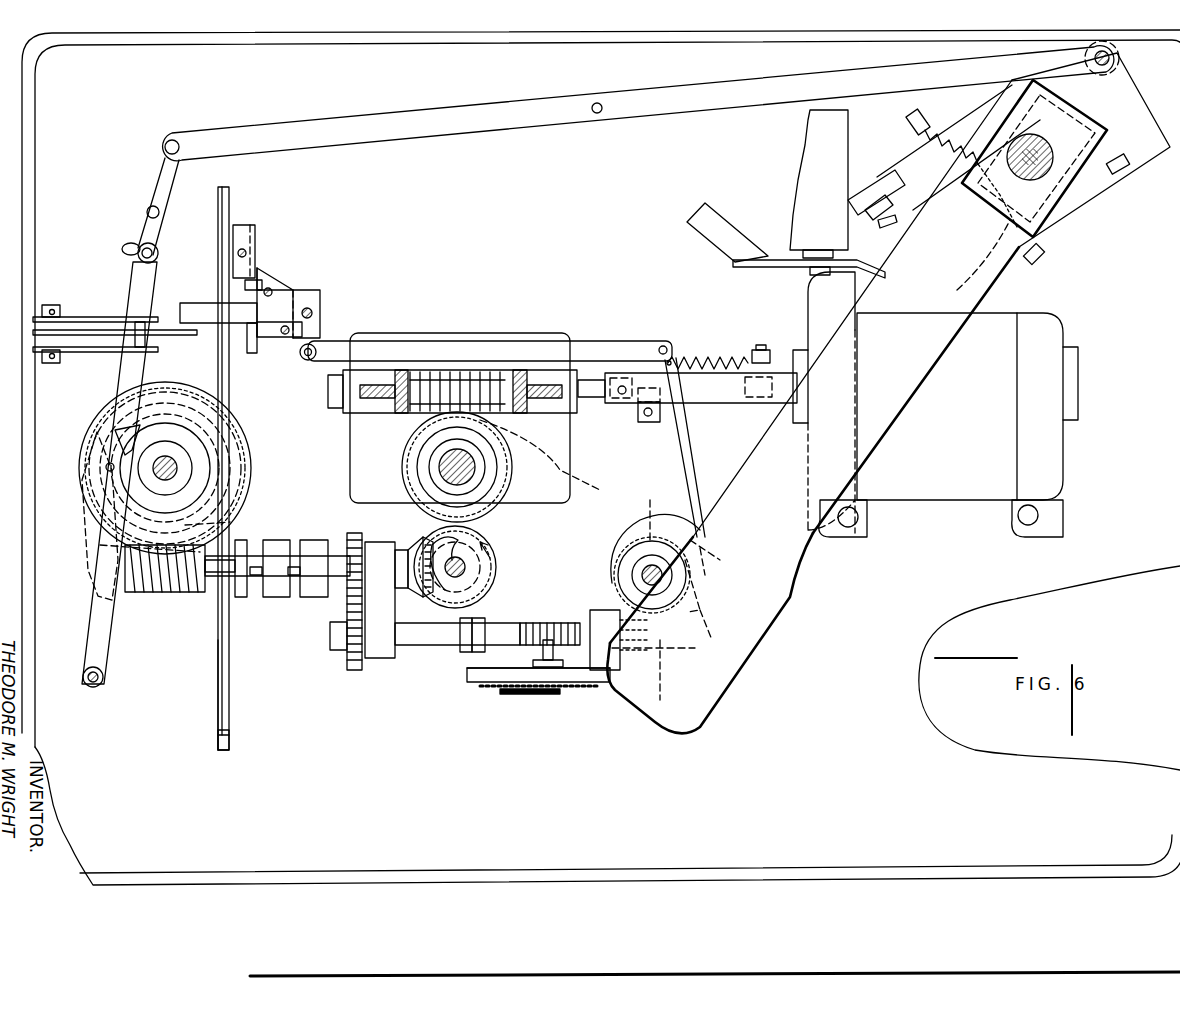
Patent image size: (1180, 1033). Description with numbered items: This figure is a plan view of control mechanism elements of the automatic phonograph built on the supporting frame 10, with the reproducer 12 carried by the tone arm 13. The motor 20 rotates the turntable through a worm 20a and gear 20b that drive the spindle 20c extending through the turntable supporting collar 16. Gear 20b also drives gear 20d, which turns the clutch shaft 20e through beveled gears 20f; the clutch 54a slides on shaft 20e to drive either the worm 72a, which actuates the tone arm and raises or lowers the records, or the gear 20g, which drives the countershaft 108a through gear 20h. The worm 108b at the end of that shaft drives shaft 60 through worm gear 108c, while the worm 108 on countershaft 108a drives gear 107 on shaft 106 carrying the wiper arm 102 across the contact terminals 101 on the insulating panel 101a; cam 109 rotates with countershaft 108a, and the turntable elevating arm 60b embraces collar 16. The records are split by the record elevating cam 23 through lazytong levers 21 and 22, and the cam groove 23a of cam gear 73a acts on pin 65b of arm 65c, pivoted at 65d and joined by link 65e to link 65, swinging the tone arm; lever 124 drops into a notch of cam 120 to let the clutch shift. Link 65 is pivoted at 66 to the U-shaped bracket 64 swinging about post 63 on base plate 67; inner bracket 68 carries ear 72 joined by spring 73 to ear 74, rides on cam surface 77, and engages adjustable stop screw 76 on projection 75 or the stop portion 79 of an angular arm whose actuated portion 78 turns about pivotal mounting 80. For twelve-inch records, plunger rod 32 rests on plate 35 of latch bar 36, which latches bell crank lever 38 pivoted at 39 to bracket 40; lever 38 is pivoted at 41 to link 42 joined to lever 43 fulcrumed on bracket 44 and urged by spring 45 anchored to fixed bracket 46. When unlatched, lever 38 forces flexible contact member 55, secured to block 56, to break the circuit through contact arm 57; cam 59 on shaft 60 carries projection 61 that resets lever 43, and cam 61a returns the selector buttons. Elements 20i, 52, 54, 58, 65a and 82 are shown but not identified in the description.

The supporting frame 10 is at (999, 679).
The reproducer 12 is at (732, 665).
The tone arm 13 is at (888, 405).
The turntable supporting collar 16 is at (425, 480).
The motor 20 is at (935, 500).
The worm 20a is at (475, 368).
The gear 20b is at (440, 467).
The spindle 20c is at (440, 460).
The gear 20d is at (497, 553).
The clutch shaft 20e is at (333, 556).
The beveled gears 20f is at (425, 594).
The gear 20g is at (357, 534).
The gear 20h is at (350, 660).
The pawl 20i is at (468, 570).
The lazytong lever 21 is at (230, 640).
The lazytong lever 22 is at (218, 633).
The record elevating cam 23 is at (238, 510).
The cam groove 23a is at (112, 437).
The plunger rod 32 is at (246, 253).
The plate 35 is at (245, 228).
The latch bar 36 is at (250, 335).
The bell crank lever 38 is at (190, 302).
The pivot 39 is at (312, 312).
The bracket 40 is at (278, 290).
The pivot 41 is at (304, 360).
The link 42 is at (445, 345).
The lever 43 is at (690, 463).
The bracket 44 is at (650, 424).
The spring 45 is at (683, 358).
The fixed bracket 46 is at (760, 347).
The rod end 52 is at (217, 688).
The gear 54 is at (245, 440).
The clutch 54a is at (277, 590).
The flexible electric contact member 55 is at (160, 335).
The block 56 is at (52, 302).
The contact arm 57 is at (92, 315).
The bracket 58 is at (75, 358).
The cam 59 is at (642, 568).
The turntable elevating cam shaft 60 is at (640, 572).
The turntable elevating arm 60b is at (606, 496).
The projection 61 is at (698, 625).
The cam 61a is at (663, 512).
The post 63 is at (1028, 178).
The U-shaped bracket 64 is at (1091, 150).
The cam controlled link 65 is at (556, 112).
The pin 65a is at (600, 113).
The pin 65b is at (106, 468).
The arm 65c is at (105, 635).
The pivot 65d is at (92, 688).
The link 65e is at (158, 187).
The pivot 66 is at (1110, 56).
The base plate 67 is at (1105, 318).
The inner U-shaped bracket 68 is at (1000, 300).
The ear 72 is at (1045, 252).
The worm 72a is at (148, 593).
The spring 73 is at (940, 162).
The cam gear 73a is at (250, 455).
The ear 74 is at (905, 125).
The upstanding projection 75 is at (870, 195).
The adjustable stop screw 76 is at (865, 215).
The cam surface 77 is at (880, 185).
The actuated portion 78 is at (715, 222).
The stop portion 79 is at (852, 290).
The pivotal mounting 80 is at (810, 272).
The stop 82 is at (1125, 158).
The contact terminals 101 is at (490, 685).
The upright insulating panel 101a is at (470, 680).
The wiper arm 102 is at (505, 690).
The shaft 106 is at (548, 696).
The gear 107 is at (545, 638).
The worm 108 is at (558, 622).
The countershaft 108a is at (415, 640).
The worm 108b is at (660, 660).
The worm gear 108c is at (650, 498).
The cam 109 is at (468, 645).
The cam 120 is at (232, 523).
The lever 124 is at (85, 540).